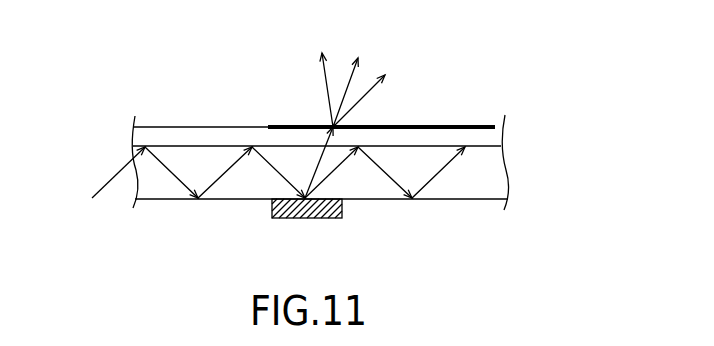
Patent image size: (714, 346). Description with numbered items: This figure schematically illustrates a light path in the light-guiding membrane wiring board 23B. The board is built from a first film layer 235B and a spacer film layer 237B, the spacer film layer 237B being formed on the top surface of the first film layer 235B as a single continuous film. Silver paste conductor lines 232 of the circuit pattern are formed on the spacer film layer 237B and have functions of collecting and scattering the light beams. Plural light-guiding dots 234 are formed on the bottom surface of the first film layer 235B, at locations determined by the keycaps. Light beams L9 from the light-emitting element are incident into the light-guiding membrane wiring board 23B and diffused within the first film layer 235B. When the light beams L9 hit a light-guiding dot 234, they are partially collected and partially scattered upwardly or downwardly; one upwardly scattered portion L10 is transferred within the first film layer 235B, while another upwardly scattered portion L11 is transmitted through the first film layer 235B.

The light-guiding membrane wiring board 23B is at (253, 80).
The spacer film layer 237B is at (232, 130).
The silver paste conductor lines 232 is at (415, 125).
The first film layer 235B is at (457, 190).
The light-guiding dots 234 is at (300, 207).
The light beams L9 is at (105, 182).
The light beams L10 is at (340, 169).
The light beams L11 is at (318, 162).